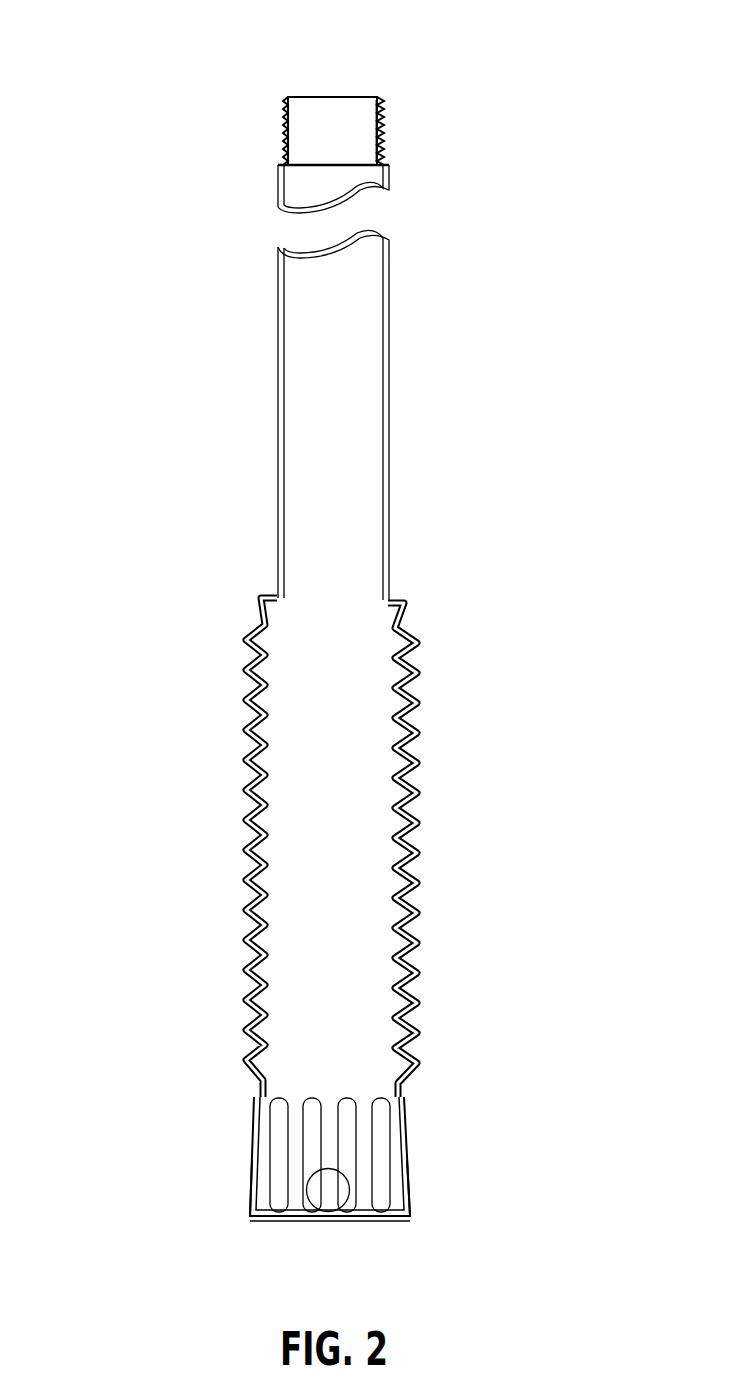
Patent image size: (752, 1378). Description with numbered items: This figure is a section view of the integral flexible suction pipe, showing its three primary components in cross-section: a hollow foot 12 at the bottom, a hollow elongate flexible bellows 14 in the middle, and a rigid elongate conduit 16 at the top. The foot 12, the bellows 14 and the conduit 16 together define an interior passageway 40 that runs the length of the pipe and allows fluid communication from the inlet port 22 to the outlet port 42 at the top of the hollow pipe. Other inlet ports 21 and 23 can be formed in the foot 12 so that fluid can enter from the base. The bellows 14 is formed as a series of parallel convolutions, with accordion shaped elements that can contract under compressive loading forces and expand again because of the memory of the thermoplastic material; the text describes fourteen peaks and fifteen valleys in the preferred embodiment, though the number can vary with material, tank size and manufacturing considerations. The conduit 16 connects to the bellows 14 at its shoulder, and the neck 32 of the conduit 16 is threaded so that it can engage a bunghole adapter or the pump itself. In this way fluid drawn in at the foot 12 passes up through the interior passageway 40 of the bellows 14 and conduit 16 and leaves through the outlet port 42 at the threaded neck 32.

The hollow foot 12 is at (250, 1132).
The hollow elongate flexible bellows 14 is at (243, 819).
The rigid elongate conduit 16 is at (277, 375).
The inlet port 21 is at (250, 1187).
The inlet port 22 is at (330, 1190).
The inlet port 23 is at (410, 1190).
The neck of the conduit 32 is at (283, 120).
The interior passageway 40 is at (332, 144).
The outlet port 42 is at (335, 120).